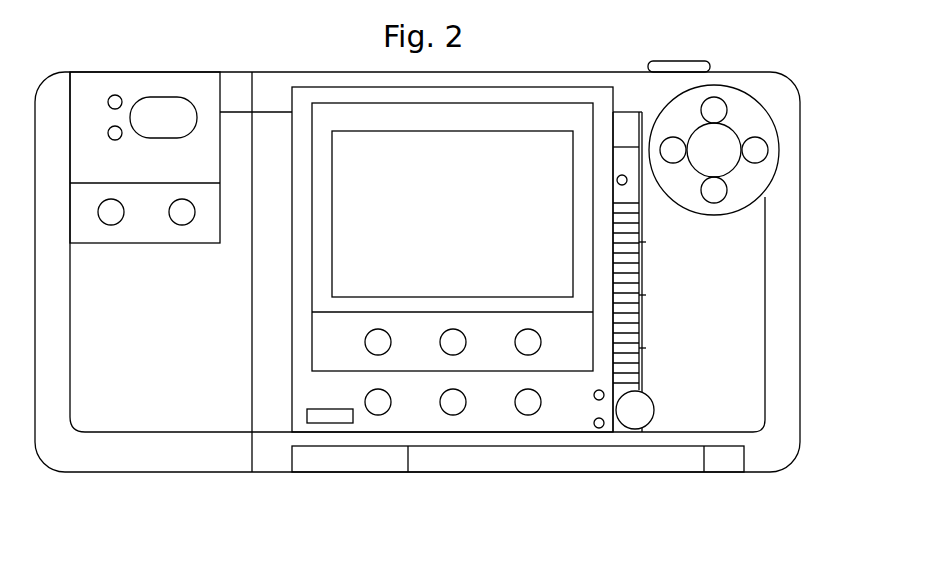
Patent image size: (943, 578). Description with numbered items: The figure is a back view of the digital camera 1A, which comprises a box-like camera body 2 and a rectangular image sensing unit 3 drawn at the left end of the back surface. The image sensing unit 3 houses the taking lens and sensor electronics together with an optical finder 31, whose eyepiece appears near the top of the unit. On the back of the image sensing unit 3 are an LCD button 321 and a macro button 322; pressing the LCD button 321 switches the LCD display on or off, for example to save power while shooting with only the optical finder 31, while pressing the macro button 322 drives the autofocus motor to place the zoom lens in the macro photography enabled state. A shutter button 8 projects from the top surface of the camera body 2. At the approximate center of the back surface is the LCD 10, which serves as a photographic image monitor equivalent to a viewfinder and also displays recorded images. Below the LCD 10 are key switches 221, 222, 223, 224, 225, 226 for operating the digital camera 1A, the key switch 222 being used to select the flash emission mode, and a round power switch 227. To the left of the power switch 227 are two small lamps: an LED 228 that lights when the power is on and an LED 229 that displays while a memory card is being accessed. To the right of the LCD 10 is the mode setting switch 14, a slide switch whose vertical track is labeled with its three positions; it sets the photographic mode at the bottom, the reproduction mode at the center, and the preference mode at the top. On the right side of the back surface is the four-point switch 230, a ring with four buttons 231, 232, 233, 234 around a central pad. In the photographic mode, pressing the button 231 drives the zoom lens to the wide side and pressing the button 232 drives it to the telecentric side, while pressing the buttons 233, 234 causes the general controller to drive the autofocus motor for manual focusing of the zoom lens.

The digital camera 1A is at (303, 47).
The camera body 2 is at (306, 492).
The image sensing unit 3 is at (190, 492).
The shutter button 8 is at (683, 60).
The LCD 10 is at (462, 226).
The mode setting switch 14 is at (639, 366).
The optical finder 31 is at (172, 97).
The LCD button 321 is at (182, 225).
The macro button 322 is at (111, 225).
The key switch 221 is at (378, 329).
The key switch 222 is at (453, 329).
The key switch 223 is at (528, 329).
The key switch 224 is at (378, 415).
The key switch 225 is at (453, 415).
The key switch 226 is at (528, 415).
The power switch 227 is at (654, 410).
The LED 228 is at (599, 390).
The LED 229 is at (599, 428).
The 4-point switch 230 is at (762, 98).
The button 231 is at (673, 147).
The button 232 is at (757, 153).
The button 233 is at (712, 105).
The button 234 is at (718, 188).